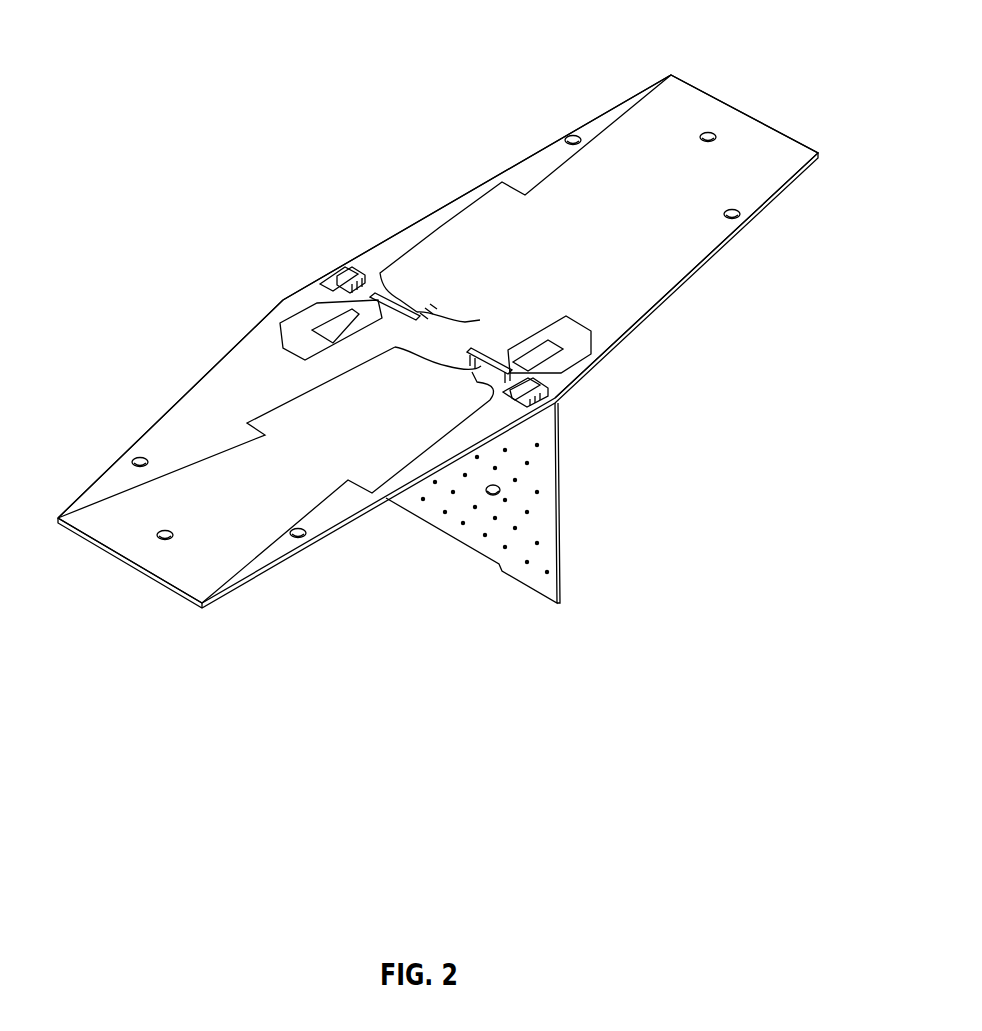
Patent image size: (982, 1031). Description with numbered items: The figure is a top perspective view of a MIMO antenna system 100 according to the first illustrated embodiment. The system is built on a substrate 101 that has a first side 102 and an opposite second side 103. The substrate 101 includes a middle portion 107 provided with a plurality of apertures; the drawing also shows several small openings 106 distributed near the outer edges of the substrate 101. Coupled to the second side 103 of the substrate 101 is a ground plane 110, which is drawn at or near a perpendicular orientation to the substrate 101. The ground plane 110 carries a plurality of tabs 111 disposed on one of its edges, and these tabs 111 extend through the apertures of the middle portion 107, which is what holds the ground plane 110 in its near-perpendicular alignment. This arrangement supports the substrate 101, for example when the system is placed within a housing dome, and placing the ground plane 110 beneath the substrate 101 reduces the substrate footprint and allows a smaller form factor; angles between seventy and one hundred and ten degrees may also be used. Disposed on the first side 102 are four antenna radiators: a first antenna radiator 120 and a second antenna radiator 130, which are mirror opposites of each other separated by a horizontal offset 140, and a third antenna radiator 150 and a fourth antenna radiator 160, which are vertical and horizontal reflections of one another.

The MIMO antenna system 100 is at (122, 30).
The substrate 101 is at (440, 208).
The first side 102 is at (388, 243).
The second side 103 is at (658, 308).
The mounting holes 106 is at (566, 134).
The middle portion 107 is at (425, 335).
The ground plane 110 is at (553, 527).
The plurality of tabs 111 is at (340, 281).
The first antenna radiator 120 is at (500, 197).
The second antenna radiator 130 is at (232, 572).
The horizontal offset 140 is at (472, 347).
The third antenna radiator 150 is at (560, 325).
The fourth antenna radiator 160 is at (297, 335).